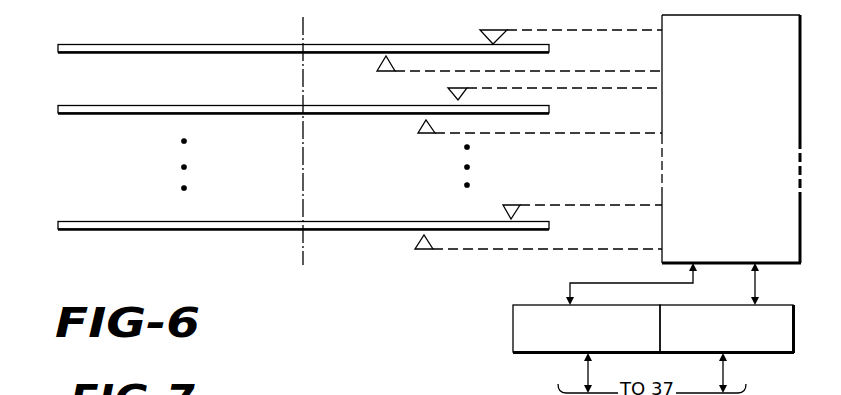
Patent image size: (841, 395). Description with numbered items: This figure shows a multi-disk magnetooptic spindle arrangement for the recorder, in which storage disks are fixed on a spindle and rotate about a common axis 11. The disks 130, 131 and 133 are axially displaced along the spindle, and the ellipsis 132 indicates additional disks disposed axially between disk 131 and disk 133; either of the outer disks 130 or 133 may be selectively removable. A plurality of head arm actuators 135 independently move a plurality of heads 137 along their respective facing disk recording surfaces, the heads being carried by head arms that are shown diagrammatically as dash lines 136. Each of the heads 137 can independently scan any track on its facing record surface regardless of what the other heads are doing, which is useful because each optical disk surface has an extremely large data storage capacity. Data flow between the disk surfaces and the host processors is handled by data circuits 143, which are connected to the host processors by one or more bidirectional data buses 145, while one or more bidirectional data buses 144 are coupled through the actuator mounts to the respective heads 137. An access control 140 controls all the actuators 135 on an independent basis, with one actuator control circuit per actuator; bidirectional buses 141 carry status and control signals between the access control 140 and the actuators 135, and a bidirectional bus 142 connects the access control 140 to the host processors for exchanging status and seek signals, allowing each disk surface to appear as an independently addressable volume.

The common axis 11 is at (304, 32).
The disk 130 is at (85, 44).
The disk 131 is at (81, 105).
The ellipsis 132 is at (162, 178).
The disk 133 is at (79, 221).
The head arm actuators 135 is at (662, 260).
The head arms 136 is at (628, 71).
The heads 137 is at (496, 30).
The access control 140 is at (538, 290).
The bidirectional buses 141 is at (570, 283).
The bidirectional bus 142 is at (585, 370).
The data circuits 143 is at (740, 305).
The bidirectional data buses 144 is at (757, 280).
The bidirectional data buses 145 is at (727, 372).